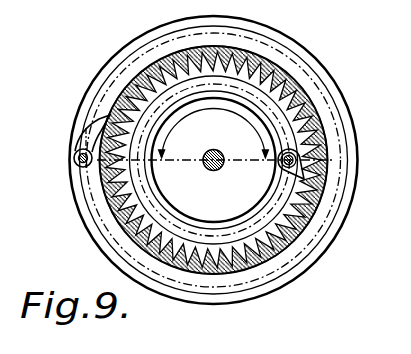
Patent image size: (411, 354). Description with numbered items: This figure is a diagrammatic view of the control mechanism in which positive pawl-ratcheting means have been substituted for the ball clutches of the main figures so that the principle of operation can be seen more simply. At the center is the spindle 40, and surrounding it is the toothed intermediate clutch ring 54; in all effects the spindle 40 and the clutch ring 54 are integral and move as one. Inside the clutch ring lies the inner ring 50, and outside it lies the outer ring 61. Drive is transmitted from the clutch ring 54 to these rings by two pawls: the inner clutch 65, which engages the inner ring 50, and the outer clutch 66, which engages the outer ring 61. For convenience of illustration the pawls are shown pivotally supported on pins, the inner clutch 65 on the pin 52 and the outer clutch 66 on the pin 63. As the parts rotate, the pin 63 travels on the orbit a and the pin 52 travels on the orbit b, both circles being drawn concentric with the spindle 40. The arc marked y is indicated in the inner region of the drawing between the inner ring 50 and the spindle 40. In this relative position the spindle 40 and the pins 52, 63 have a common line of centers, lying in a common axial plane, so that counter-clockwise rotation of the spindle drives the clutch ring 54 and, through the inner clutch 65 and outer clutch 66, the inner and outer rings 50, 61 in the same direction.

The spindle 40 is at (219, 171).
The inner ring 50 is at (152, 196).
The pin 52 is at (290, 159).
The intermediate clutch ring 54 is at (290, 90).
The outer ring 61 is at (334, 101).
The pin 63 is at (75, 160).
The inner clutch 65 is at (301, 171).
The outer clutch 66 is at (98, 129).
The orbit of pin a is at (338, 230).
The orbit of pin b is at (228, 236).
The angle y is at (214, 128).